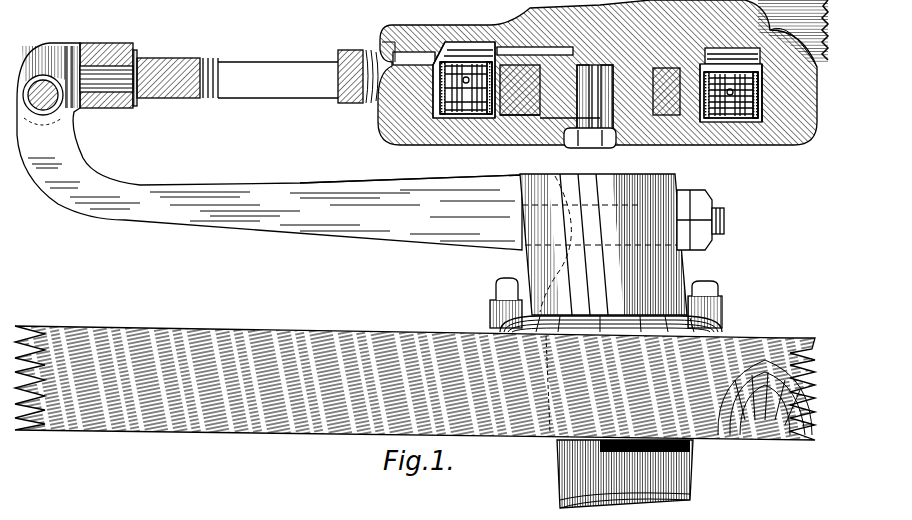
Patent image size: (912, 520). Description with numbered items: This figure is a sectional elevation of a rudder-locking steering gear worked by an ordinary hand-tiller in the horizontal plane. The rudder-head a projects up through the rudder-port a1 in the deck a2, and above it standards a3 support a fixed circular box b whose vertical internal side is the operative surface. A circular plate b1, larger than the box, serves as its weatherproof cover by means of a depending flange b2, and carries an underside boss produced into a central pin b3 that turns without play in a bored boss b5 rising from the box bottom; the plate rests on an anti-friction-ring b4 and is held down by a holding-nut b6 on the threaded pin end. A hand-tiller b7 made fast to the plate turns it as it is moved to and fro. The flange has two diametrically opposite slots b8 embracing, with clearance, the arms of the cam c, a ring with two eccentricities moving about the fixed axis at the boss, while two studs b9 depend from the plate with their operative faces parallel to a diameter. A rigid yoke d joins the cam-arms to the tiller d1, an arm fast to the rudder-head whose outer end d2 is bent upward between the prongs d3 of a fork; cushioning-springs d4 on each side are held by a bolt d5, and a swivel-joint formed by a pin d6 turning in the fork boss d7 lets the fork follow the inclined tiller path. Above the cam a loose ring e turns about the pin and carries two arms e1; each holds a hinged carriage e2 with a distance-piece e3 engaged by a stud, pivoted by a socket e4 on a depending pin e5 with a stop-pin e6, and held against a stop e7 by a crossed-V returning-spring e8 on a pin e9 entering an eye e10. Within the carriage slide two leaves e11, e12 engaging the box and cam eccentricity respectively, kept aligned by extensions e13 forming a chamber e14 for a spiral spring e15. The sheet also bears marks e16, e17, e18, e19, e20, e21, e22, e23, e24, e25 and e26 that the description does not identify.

The rudder-head a is at (690, 466).
The rudder-port a1 is at (548, 436).
The deck a2 is at (283, 340).
The standards a3 is at (648, 176).
The fixed circular box b is at (808, 118).
The circular plate b1 is at (757, 70).
The flange b2 is at (384, 58).
The central pin b3 is at (595, 102).
The anti-friction-ring b4 is at (606, 303).
The boss b5 is at (520, 47).
The holding-nut b6 is at (578, 146).
The hand-tiller b7 is at (806, 70).
The slots b8 is at (700, 220).
The studs b9 is at (716, 70).
The cam c is at (590, 90).
The yoke d is at (167, 62).
The tiller d1 is at (356, 230).
The tiller end d2 is at (100, 175).
The prongs d3 is at (70, 45).
The cushioning-spring d4 is at (60, 108).
The bolt d5 is at (42, 88).
The pin d6 is at (110, 60).
The boss d7 is at (132, 106).
The loose ring e is at (486, 60).
The arms e1 is at (466, 76).
The carriage e2 is at (450, 114).
The distance-piece e3 is at (740, 70).
The socket e4 is at (489, 116).
The pin e5 is at (496, 118).
The stop-pin e6 is at (512, 118).
The stop e7 is at (442, 116).
The returning-spring e8 is at (457, 62).
The pin e9 is at (728, 53).
The eye e10 is at (476, 62).
The leaf e11 is at (440, 50).
The leaf e12 is at (472, 114).
The extensions e13 is at (462, 112).
The chamber e14 is at (740, 90).
The spiral spring e15 is at (548, 120).
The right spring pin e16 is at (735, 90).
The right plate e17 is at (745, 100).
The cavity wall e18 is at (420, 120).
The right spring seat e19 is at (712, 120).
The right spring top e20 is at (722, 120).
The right spring post e21 is at (735, 118).
The right spring post e22 is at (745, 120).
The right plate e23 is at (755, 120).
The right plate e24 is at (750, 116).
The right side e25 is at (760, 118).
The right wall e26 is at (765, 110).